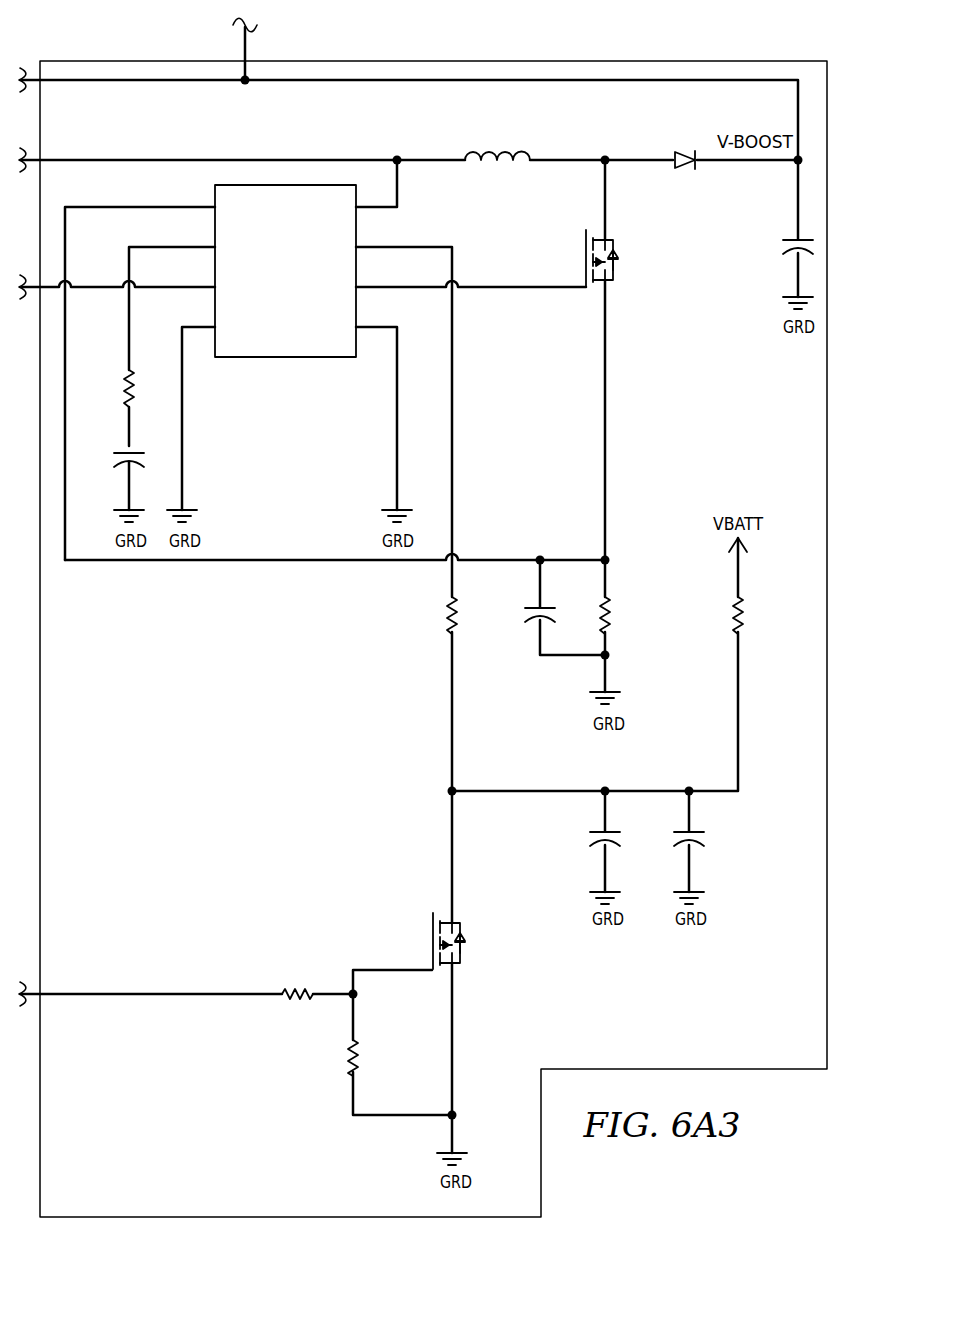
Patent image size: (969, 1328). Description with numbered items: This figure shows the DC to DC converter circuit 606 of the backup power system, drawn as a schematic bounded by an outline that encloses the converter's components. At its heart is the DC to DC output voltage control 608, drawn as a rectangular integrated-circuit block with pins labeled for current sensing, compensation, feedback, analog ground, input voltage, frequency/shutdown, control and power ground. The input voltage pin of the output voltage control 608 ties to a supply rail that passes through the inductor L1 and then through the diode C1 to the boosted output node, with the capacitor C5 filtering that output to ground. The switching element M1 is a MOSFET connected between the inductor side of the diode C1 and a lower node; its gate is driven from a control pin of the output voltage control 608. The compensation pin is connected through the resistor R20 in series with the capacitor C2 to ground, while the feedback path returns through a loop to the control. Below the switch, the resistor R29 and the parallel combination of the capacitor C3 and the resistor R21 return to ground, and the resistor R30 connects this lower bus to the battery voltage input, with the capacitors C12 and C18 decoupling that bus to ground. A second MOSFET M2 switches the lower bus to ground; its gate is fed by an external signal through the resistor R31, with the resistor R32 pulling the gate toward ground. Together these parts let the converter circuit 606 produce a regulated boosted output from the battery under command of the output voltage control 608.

The DC to DC converter circuit 606 is at (175, 781).
The DC to DC output voltage control 608 is at (278, 357).
The inductor 100U L1 is at (497, 155).
The diode IDFLS1150-7 C1 is at (684, 167).
The capacitor 150U C5 is at (775, 252).
The MOSFET 1C4G51 M1 is at (594, 258).
The MOSFET 1C4G52 M2 is at (482, 941).
The resistor 120K R20 is at (105, 384).
The capacitor 1U C2 is at (116, 464).
The resistor R29 is at (435, 615).
The capacitor 10U C3 is at (523, 625).
The resistor R21 is at (588, 615).
The resistor R30 is at (719, 615).
The capacitor .1U C12 is at (589, 846).
The capacitor 1U C18 is at (672, 846).
The resistor 10K R31 is at (296, 969).
The resistor 10K R32 is at (335, 1067).